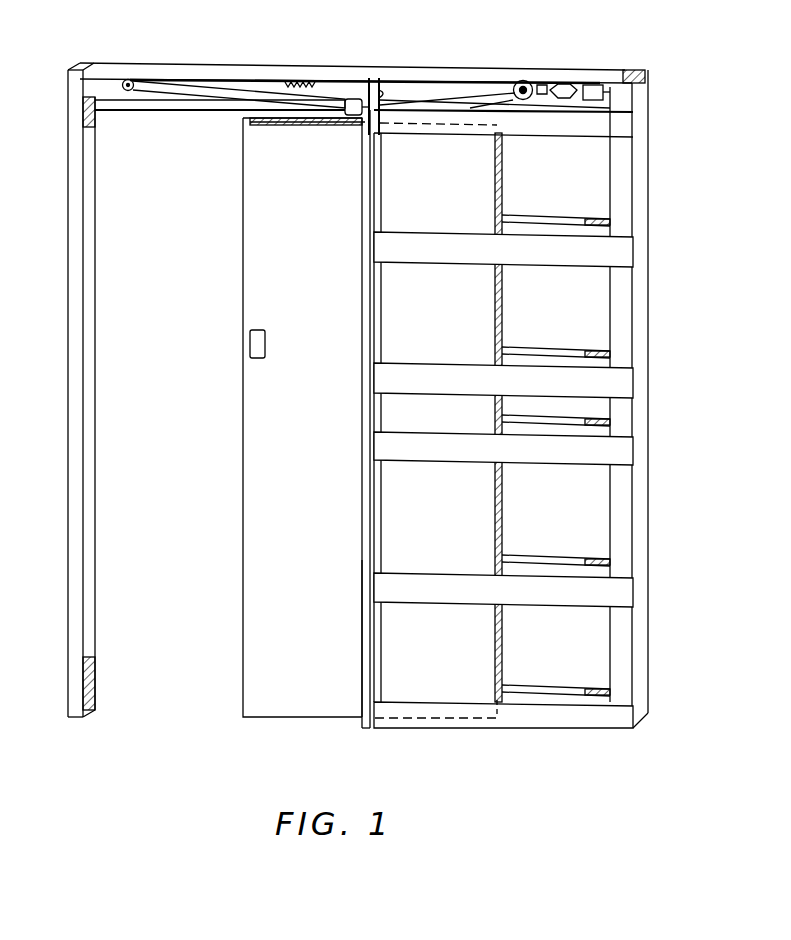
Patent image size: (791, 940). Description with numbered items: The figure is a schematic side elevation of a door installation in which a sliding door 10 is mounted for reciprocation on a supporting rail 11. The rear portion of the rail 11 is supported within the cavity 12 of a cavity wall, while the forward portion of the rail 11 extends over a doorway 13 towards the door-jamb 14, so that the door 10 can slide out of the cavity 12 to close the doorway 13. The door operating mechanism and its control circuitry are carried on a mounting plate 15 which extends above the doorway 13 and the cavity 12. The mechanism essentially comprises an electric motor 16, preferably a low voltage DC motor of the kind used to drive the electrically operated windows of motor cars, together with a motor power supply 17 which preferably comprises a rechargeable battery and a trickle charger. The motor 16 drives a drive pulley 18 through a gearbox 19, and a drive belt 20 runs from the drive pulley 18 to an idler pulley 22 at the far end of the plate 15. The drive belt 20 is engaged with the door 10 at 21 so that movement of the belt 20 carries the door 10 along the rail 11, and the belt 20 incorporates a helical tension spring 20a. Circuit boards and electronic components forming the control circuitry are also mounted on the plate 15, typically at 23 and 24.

The sliding door 10 is at (258, 545).
The supporting rail 11 is at (170, 107).
The cavity 12 is at (585, 200).
The doorway 13 is at (166, 365).
The door-jamb 14 is at (78, 305).
The mounting plate 15 is at (362, 92).
The electric motor 16 is at (553, 87).
The motor power supply 17 is at (597, 100).
The drive pulley 18 is at (515, 82).
The gearbox 19 is at (540, 82).
The drive belt 20 is at (247, 75).
The helical tension spring 20a is at (293, 80).
The belt engagement point 21 is at (317, 127).
The idler pulley 22 is at (133, 80).
The circuit boards and electronic components 23 is at (362, 660).
The circuit boards and electronic components 24 is at (362, 420).